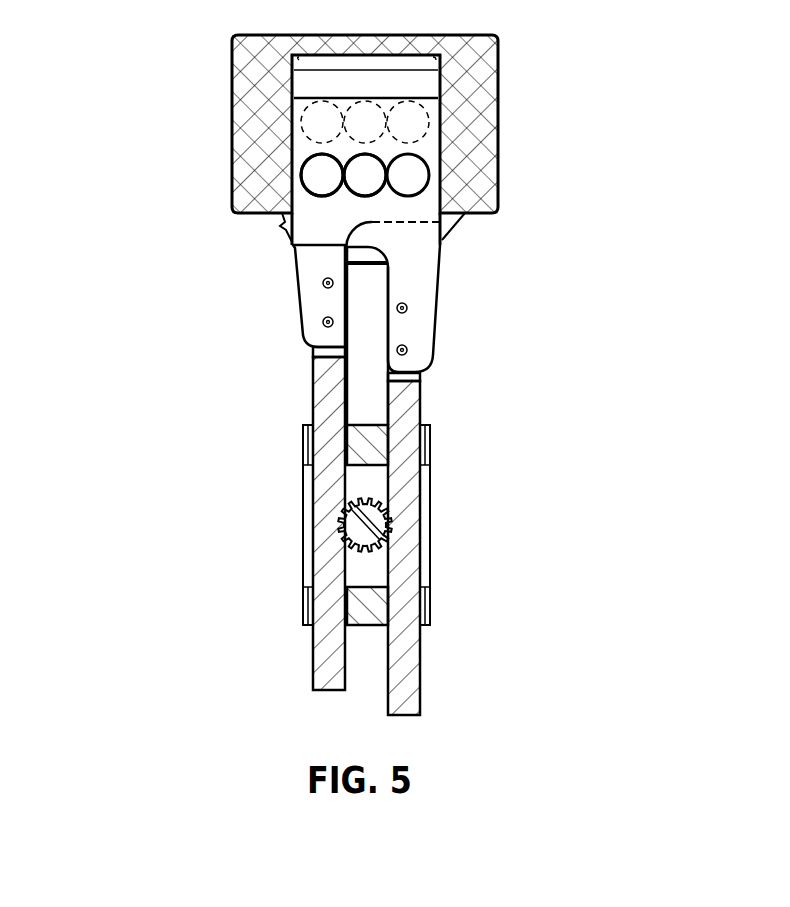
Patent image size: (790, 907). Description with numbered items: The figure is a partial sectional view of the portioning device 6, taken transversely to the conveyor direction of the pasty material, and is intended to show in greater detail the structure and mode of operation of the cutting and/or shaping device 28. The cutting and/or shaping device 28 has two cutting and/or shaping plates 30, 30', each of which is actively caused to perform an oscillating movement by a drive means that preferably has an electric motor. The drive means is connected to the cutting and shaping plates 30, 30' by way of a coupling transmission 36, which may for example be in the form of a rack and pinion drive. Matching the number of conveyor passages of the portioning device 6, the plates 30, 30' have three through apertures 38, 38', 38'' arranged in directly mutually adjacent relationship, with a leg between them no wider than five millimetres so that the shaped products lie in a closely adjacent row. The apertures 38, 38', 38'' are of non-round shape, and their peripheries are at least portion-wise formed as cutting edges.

The portioning device 6 is at (182, 316).
The cutting and/or shaping device 28 is at (517, 192).
The cutting and/or shaping plate 30 is at (456, 323).
The cutting and/or shaping plate 30' is at (261, 301).
The coupling transmission 36 is at (292, 485).
The through aperture 38 is at (457, 148).
The through aperture 38' is at (472, 134).
The through aperture 38'' is at (229, 169).